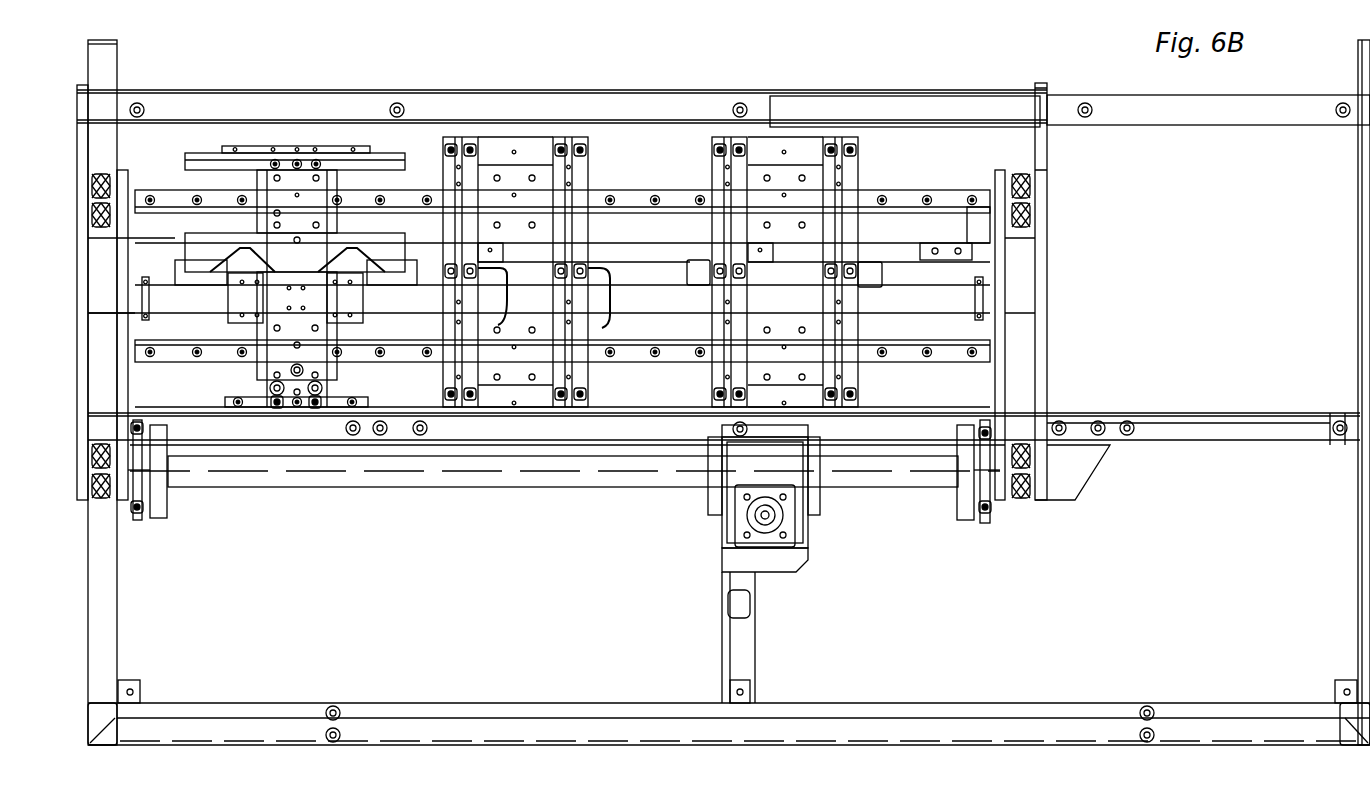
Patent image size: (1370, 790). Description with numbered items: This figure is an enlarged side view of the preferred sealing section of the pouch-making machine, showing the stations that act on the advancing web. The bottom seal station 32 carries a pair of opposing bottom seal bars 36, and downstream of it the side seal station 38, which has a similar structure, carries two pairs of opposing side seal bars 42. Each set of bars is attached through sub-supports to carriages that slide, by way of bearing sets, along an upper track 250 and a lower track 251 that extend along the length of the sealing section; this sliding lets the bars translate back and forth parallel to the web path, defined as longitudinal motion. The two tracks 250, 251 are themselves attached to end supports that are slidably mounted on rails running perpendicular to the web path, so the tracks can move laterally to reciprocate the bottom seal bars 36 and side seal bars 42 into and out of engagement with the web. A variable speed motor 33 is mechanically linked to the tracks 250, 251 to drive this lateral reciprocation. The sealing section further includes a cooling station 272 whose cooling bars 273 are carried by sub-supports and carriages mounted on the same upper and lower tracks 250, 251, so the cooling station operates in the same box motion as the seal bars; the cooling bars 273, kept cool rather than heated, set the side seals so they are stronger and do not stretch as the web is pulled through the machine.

The bottom seal station 32 is at (323, 133).
The variable speed motor 33 is at (767, 532).
The bottom seal bars 36 is at (205, 237).
The side seal station 38 is at (515, 132).
The side seal bars 42 is at (450, 220).
The upper track 250 is at (682, 195).
The lower track 251 is at (682, 357).
The cooling station 272 is at (783, 132).
The cooling bars 273 is at (710, 163).